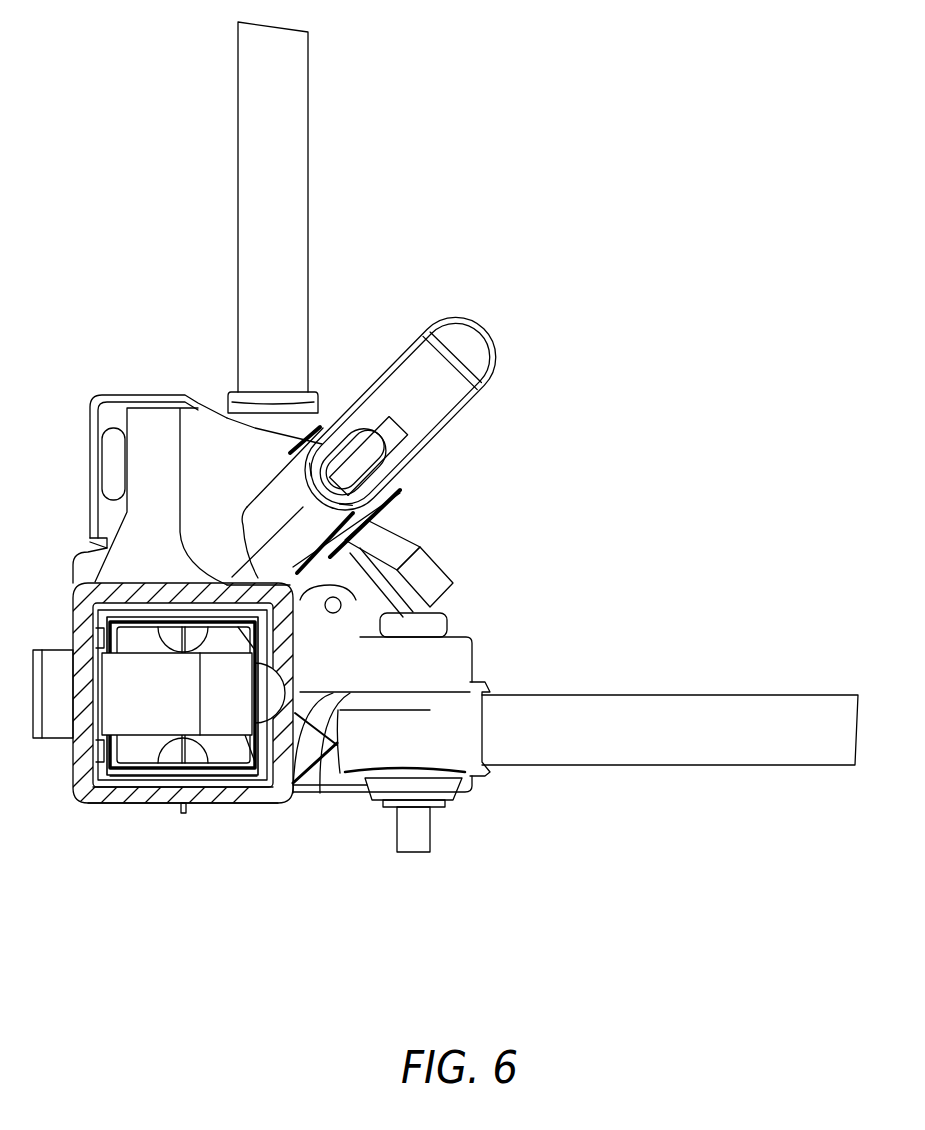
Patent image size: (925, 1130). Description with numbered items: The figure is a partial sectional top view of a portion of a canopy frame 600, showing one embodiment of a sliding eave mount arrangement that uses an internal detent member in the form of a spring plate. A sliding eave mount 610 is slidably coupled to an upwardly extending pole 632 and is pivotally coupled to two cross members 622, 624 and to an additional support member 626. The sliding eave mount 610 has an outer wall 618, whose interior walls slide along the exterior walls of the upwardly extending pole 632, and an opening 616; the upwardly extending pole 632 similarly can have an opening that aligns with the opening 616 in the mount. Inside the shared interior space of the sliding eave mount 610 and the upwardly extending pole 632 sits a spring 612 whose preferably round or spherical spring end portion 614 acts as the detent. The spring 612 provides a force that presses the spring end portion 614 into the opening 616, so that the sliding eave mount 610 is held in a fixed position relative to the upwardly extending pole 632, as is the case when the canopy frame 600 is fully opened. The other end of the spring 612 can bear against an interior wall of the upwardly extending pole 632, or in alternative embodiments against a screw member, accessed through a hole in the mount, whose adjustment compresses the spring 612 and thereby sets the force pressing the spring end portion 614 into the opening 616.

The canopy frame 600 is at (632, 260).
The sliding eave mount 610 is at (95, 818).
The spring 612 is at (130, 672).
The spring end portion 614 is at (290, 690).
The opening 616 is at (262, 646).
The outer wall 618 is at (213, 803).
The cross member 622 is at (640, 700).
The cross member 624 is at (243, 293).
The additional support member 626 is at (428, 365).
The upwardly extending pole 632 is at (165, 783).